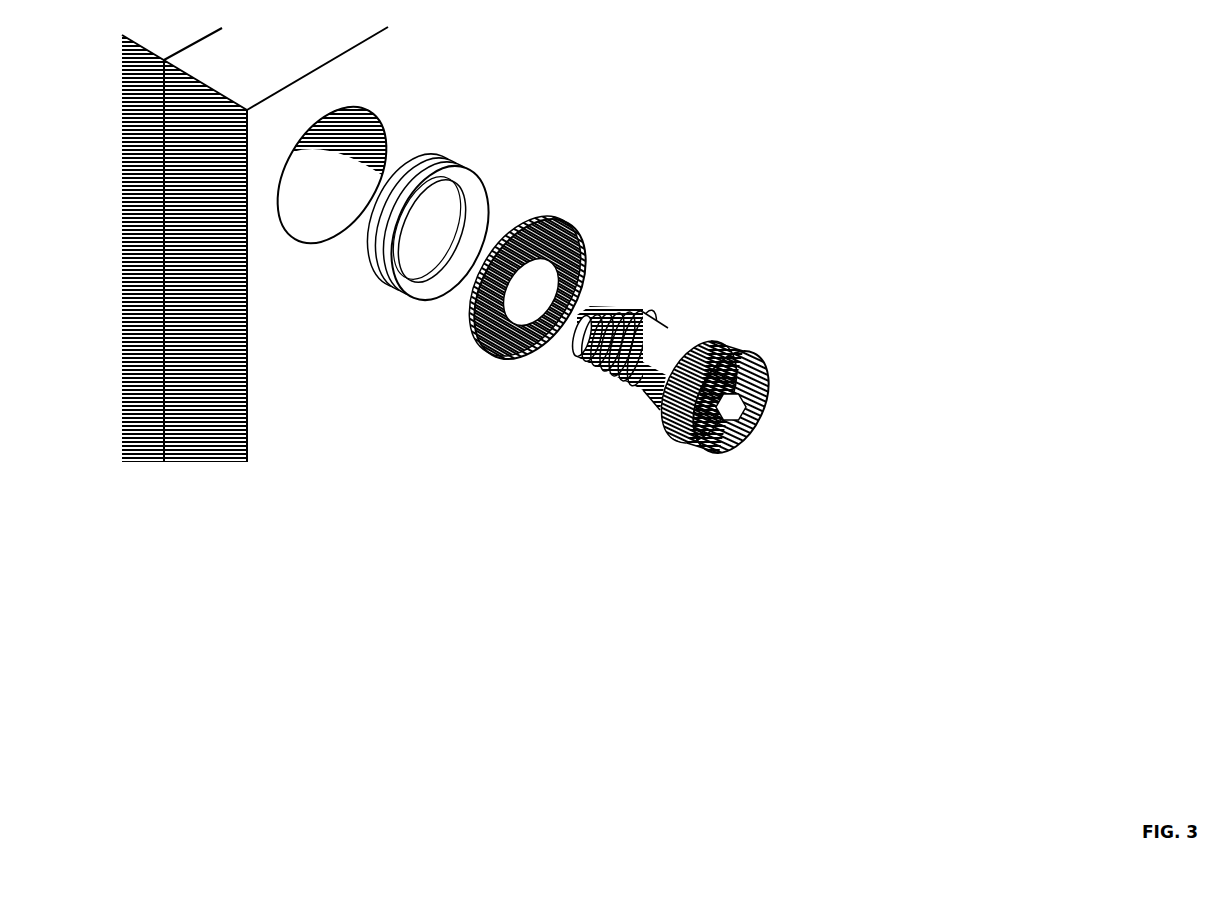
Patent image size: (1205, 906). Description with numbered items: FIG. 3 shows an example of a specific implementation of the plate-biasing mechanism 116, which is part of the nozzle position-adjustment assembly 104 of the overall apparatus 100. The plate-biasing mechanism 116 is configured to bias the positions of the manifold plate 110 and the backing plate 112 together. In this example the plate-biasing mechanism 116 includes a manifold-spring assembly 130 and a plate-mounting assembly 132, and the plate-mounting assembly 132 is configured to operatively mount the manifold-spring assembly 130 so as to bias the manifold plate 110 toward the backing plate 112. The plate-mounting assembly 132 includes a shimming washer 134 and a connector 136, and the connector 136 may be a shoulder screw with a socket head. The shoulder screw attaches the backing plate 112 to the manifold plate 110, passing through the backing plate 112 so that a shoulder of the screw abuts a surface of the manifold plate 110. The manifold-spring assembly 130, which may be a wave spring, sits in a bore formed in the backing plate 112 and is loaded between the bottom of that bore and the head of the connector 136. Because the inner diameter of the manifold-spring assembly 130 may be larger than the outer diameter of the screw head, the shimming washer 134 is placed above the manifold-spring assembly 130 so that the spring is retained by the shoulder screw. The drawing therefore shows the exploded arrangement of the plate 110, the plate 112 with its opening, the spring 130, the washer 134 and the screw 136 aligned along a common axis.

The fastening system 100 is at (483, 421).
The nozzle position-adjustment assembly 104 is at (582, 443).
The manifold plate 110 is at (483, 284).
The backing plate 112 is at (708, 267).
The plate-biasing mechanism 116 is at (582, 415).
The manifold-spring assembly 130 is at (405, 303).
The plate-mounting assembly 132 is at (644, 398).
The shimming washer 134 is at (528, 362).
The connector 136 is at (755, 400).